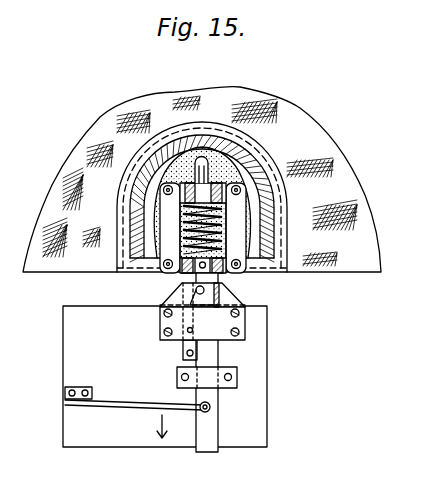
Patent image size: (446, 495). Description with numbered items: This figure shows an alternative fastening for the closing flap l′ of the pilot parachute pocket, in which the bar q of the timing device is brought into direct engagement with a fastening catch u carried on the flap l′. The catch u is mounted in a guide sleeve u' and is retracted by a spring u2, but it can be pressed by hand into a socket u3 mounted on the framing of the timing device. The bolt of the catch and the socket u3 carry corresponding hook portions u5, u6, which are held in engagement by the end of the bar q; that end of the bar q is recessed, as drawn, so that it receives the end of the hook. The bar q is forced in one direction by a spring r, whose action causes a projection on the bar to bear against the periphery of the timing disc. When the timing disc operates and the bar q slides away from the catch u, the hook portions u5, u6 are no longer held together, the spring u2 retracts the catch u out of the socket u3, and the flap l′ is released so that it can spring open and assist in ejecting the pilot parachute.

The closing flap l′ is at (363, 218).
The guide sleeve u' is at (257, 149).
The spring u2 is at (258, 203).
The fastening catch u is at (240, 251).
The hook portion u5 is at (190, 274).
The hook portion u6 is at (180, 292).
The socket u3 is at (233, 298).
The bar q is at (208, 348).
The spring r is at (140, 406).